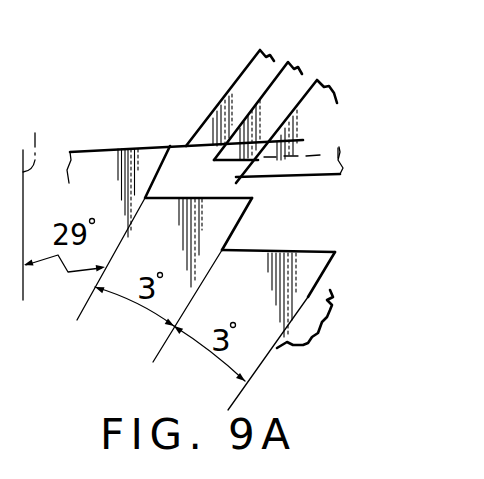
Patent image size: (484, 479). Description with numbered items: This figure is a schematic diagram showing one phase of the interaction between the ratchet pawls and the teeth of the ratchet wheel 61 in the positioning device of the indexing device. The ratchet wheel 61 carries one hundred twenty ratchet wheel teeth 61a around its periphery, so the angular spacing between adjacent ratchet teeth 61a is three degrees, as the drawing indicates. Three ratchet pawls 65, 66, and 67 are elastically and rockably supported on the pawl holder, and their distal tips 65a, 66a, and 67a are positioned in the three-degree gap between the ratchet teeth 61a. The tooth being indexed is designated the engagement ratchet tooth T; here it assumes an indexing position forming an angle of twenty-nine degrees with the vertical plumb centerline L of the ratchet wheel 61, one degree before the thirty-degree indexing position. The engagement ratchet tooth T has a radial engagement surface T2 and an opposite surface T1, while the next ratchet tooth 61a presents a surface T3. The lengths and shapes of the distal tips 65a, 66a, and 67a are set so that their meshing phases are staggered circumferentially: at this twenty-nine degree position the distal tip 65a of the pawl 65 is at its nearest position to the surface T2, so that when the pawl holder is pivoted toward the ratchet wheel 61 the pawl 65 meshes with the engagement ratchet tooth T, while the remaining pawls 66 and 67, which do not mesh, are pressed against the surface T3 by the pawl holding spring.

The ratchet wheel 61 is at (263, 299).
The ratchet wheel teeth 61a is at (242, 221).
The ratchet pawl 65 is at (241, 73).
The distal tip of pawl 65a is at (193, 140).
The middle ratchet pawl 66 is at (275, 63).
The distal tip of middle pawl 66a is at (241, 164).
The ratchet pawl 67 is at (308, 92).
The distal tip of pawl 67a is at (236, 183).
The engagement ratchet tooth T is at (128, 140).
The opposite surface of engagement ratchet tooth T1 is at (95, 148).
The engagement surface of engagement ratchet tooth T2 is at (157, 173).
The surface of next ratchet tooth T3 is at (252, 197).
The vertical centerline L is at (32, 201).